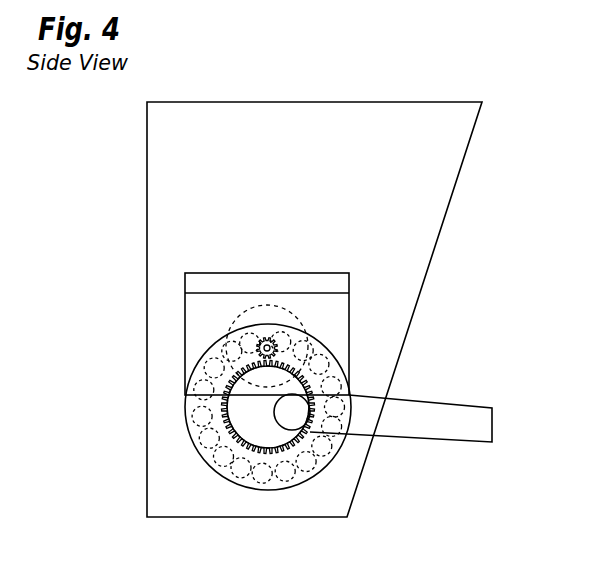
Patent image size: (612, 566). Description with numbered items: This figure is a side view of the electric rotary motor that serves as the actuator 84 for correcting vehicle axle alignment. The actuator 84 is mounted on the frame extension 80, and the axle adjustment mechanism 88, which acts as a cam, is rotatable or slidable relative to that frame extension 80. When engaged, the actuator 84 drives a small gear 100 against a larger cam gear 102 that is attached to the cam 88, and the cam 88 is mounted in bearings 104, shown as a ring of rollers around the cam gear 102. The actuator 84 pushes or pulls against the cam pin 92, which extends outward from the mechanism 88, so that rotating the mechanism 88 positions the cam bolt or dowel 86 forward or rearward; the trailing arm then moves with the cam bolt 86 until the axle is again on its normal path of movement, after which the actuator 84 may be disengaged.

The frame extension 80 is at (160, 216).
The actuator 84 is at (301, 318).
The cam bolt or dowel 86 is at (296, 411).
The axle adjustment mechanism 88 is at (252, 428).
The cam pin 92 is at (430, 427).
The gear 100 is at (266, 341).
The cam gear 102 is at (198, 407).
The bearings 104 is at (305, 467).